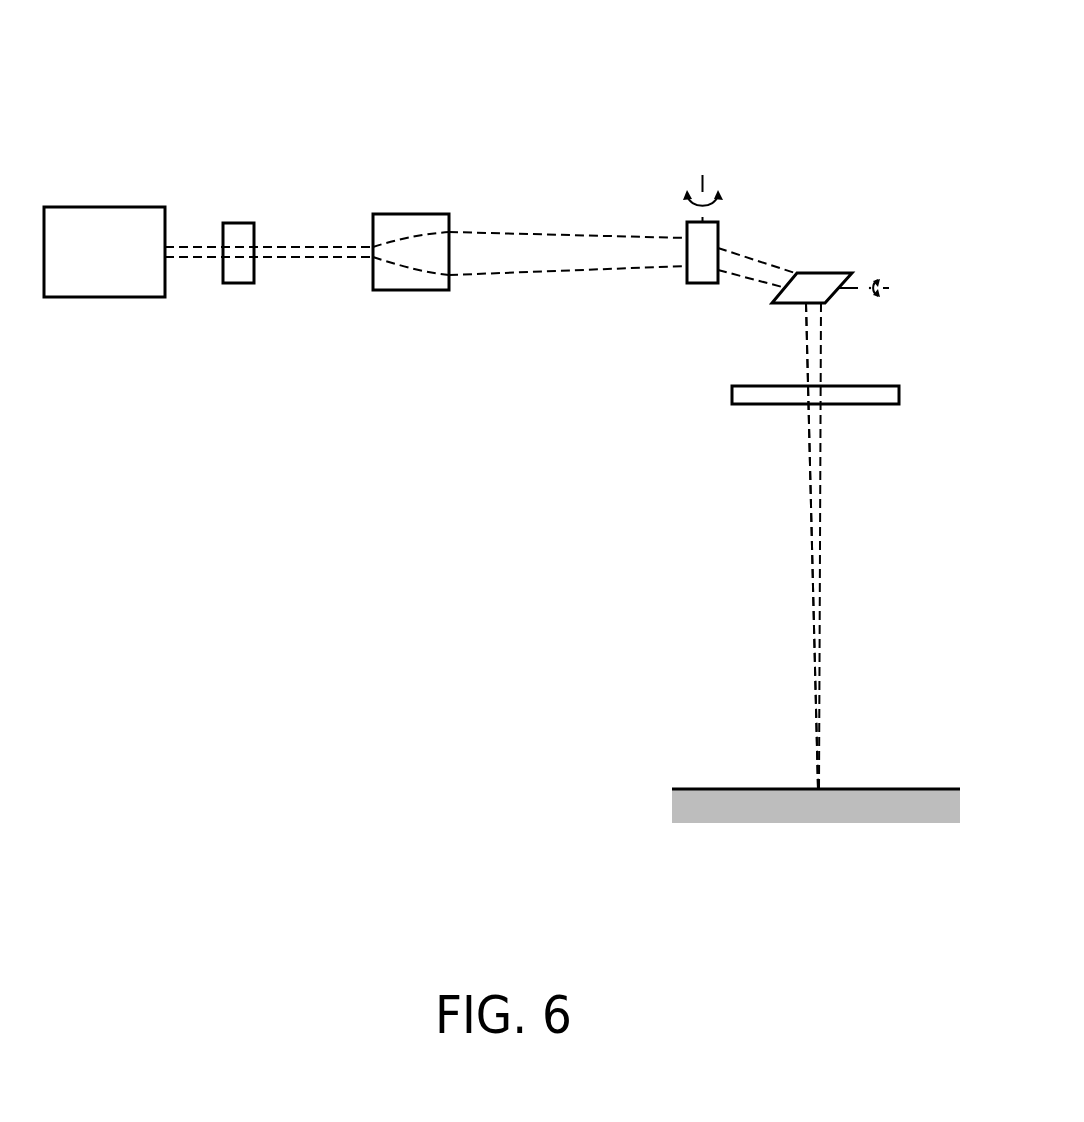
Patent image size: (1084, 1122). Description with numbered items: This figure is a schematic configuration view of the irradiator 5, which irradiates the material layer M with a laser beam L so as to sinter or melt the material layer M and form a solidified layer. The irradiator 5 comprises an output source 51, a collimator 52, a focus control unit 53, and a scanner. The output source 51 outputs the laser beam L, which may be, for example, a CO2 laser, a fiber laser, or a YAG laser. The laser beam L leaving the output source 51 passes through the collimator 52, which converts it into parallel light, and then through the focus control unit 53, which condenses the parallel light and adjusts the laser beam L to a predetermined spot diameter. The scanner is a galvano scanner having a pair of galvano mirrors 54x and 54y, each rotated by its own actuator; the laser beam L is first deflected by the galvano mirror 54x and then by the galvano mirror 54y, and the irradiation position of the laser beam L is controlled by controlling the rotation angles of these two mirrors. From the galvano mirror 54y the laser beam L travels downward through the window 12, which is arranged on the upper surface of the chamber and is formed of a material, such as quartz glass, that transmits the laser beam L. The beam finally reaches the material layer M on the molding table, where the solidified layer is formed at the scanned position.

The irradiator 5 is at (882, 115).
The output source 51 is at (118, 218).
The collimator 52 is at (239, 273).
The focus control unit 53 is at (396, 278).
The galvano mirror 54x is at (698, 272).
The galvano mirror 54y is at (827, 277).
The window 12 is at (752, 397).
The laser beam L is at (812, 517).
The material layer M is at (725, 802).